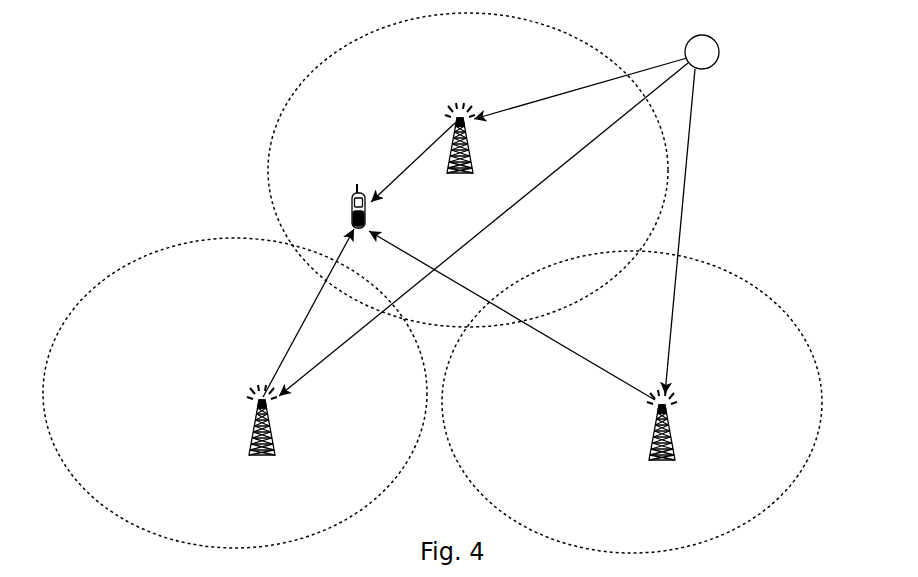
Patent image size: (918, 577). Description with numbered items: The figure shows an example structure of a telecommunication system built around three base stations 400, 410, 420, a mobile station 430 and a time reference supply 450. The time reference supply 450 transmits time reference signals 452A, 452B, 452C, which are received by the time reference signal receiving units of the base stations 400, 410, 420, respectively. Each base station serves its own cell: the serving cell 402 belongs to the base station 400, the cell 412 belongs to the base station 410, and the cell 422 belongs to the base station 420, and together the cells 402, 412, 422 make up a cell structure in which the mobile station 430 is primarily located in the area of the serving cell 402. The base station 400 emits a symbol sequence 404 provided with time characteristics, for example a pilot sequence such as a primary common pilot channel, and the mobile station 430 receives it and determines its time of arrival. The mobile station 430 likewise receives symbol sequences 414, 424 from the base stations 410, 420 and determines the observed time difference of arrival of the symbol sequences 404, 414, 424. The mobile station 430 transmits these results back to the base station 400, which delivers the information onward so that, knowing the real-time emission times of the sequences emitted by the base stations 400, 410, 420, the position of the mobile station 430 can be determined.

The base station 400 is at (508, 160).
The serving cell 402 is at (342, 51).
The symbol sequence 404 is at (402, 170).
The base station 410 is at (308, 430).
The cell 412 is at (122, 268).
The symbol sequence 414 is at (272, 375).
The base station 420 is at (710, 437).
The cell 422 is at (785, 272).
The symbol sequence 424 is at (500, 274).
The mobile station 430 is at (356, 190).
The time reference supply 450 is at (750, 44).
The time reference signal 452A is at (522, 100).
The time reference signal 452B is at (585, 140).
The time reference signal 452C is at (687, 165).